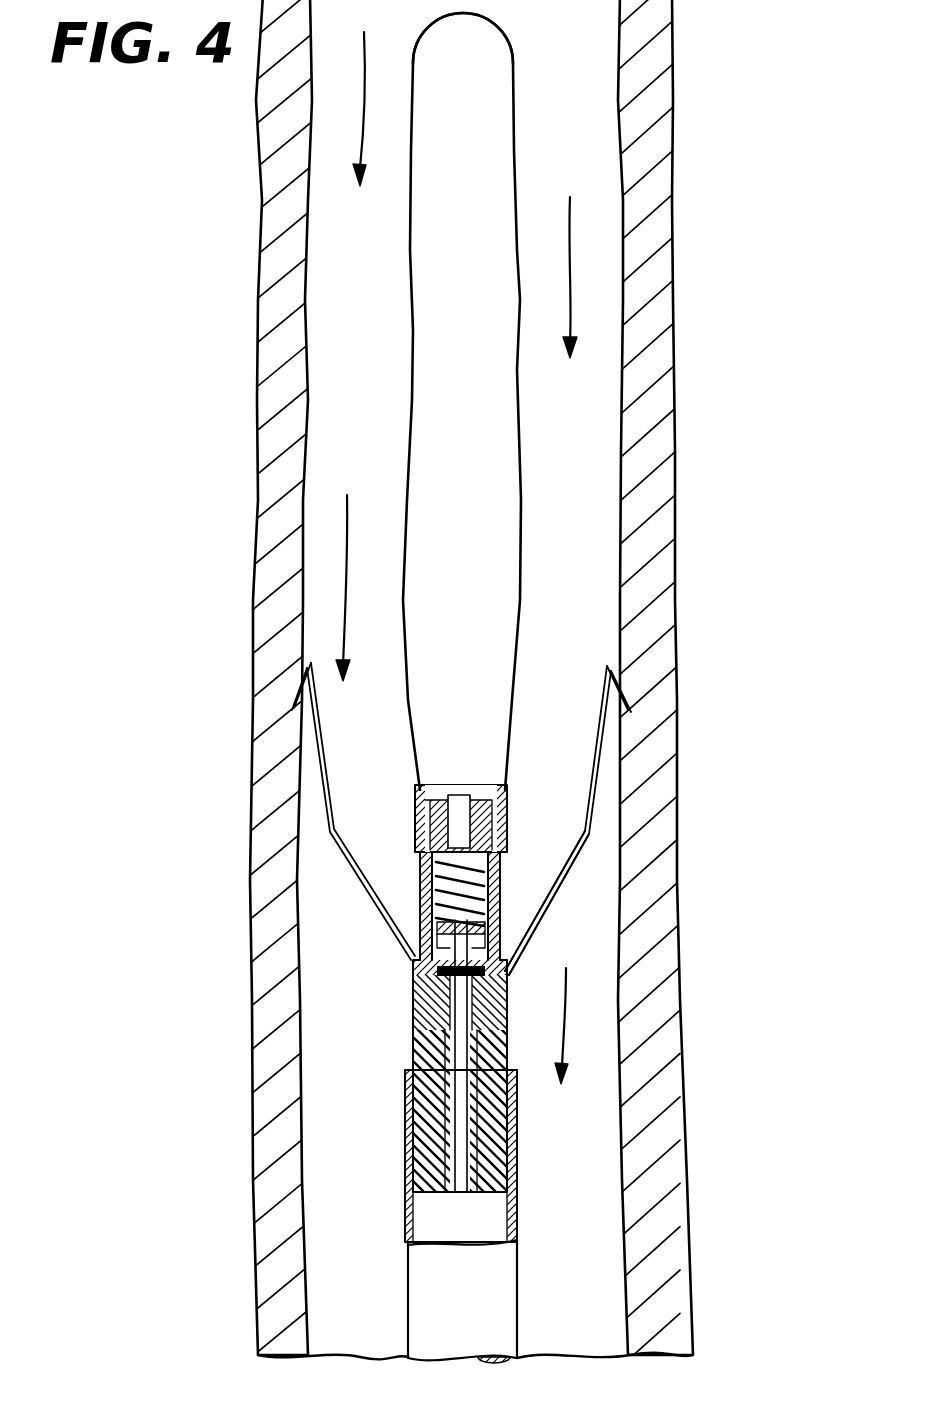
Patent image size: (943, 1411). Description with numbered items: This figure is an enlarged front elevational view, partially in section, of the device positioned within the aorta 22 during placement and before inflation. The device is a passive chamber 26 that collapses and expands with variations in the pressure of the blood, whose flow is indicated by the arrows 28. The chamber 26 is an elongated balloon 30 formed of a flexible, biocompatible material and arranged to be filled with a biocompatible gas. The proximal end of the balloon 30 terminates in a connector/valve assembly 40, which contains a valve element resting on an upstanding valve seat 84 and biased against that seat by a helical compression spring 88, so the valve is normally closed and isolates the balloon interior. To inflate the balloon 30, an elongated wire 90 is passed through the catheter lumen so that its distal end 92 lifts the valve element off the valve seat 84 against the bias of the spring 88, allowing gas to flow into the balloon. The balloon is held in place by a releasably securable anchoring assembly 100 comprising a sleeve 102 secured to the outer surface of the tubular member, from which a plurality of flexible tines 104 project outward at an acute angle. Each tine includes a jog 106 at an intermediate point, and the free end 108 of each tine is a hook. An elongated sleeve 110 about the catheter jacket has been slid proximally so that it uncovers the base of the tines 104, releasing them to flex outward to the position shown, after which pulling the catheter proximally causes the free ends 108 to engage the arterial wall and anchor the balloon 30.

The aorta 22 is at (665, 92).
The chamber 26 is at (480, 60).
The flow of blood 28 is at (600, 262).
The elongated balloon 30 is at (482, 166).
The connector/valve assembly 40 is at (510, 866).
The valve seat 84 is at (440, 922).
The helical compression spring 88 is at (420, 877).
The elongated wire 90 is at (453, 1153).
The distal end of wire 92 is at (425, 925).
The anchoring assembly 100 is at (514, 1020).
The sleeve 102 is at (507, 973).
The flexible tines 104 is at (587, 833).
The jog 106 is at (333, 829).
The free end of tine 108 is at (300, 694).
The elongated sleeve 110 is at (513, 1193).